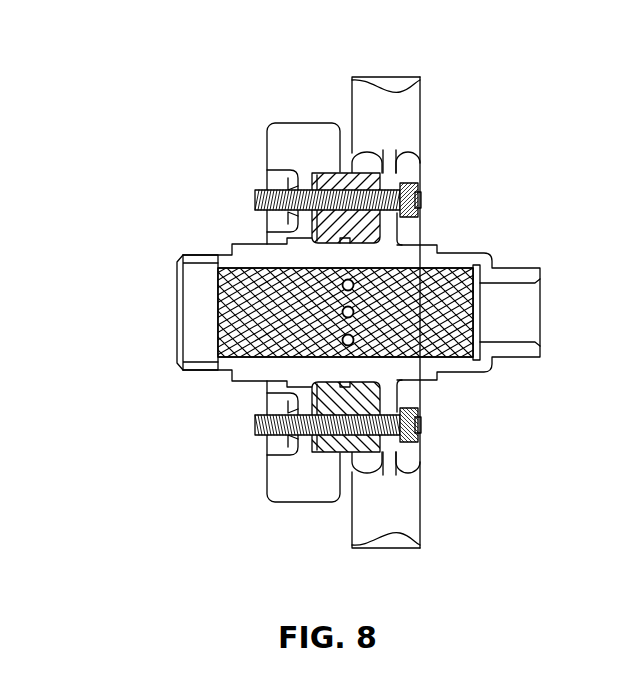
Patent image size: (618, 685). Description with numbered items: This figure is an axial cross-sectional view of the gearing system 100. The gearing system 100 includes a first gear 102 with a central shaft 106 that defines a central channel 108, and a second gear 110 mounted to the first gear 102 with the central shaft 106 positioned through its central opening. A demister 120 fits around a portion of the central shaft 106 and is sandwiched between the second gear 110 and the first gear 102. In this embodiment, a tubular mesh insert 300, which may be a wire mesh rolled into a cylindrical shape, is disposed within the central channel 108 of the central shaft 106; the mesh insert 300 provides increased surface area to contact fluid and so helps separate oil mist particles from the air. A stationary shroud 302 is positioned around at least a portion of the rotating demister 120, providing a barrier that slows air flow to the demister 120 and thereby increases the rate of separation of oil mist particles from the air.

The gearing system 100 is at (116, 58).
The first gear 102 is at (436, 96).
The central shaft 106 is at (196, 254).
The central channel 108 is at (233, 318).
The second gear 110 is at (281, 120).
The demister 120 is at (381, 186).
The tubular mesh insert 300 is at (452, 268).
The stationary shroud 302 is at (343, 173).